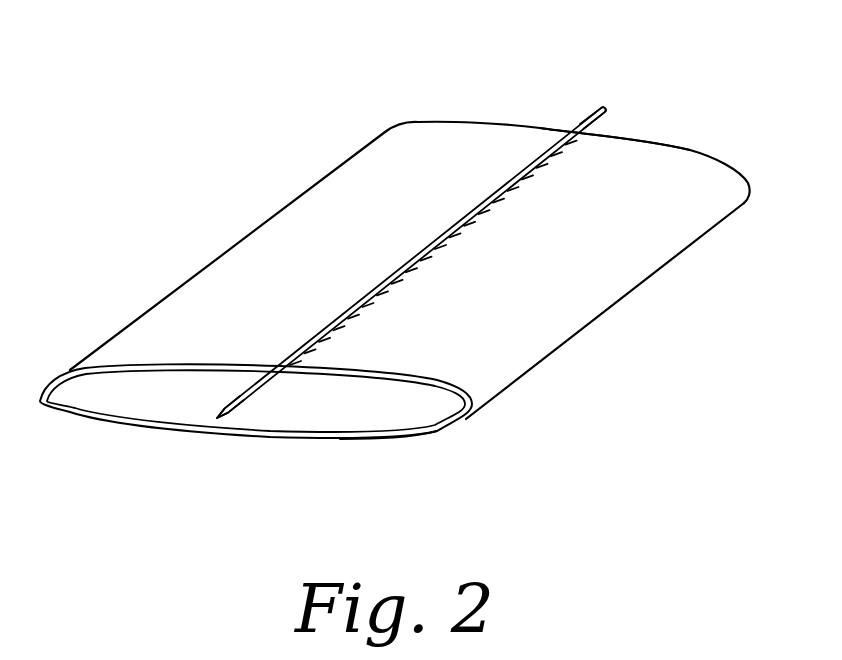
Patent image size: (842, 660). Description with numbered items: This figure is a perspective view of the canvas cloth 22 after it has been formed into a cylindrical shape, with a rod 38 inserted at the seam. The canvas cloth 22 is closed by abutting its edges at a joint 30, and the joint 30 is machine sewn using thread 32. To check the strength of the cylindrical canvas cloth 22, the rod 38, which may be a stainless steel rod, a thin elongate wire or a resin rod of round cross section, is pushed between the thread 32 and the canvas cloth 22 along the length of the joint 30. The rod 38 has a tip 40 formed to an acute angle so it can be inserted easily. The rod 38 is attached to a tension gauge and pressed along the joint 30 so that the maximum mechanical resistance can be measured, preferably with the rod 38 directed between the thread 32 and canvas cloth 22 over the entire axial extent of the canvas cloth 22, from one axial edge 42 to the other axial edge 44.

The canvas cloth 22 is at (567, 323).
The joint 30 is at (573, 108).
The thread 32 is at (300, 352).
The rod 38 is at (606, 111).
The tip 40 is at (230, 414).
The axial edge 42 is at (686, 147).
The axial edge 44 is at (385, 439).